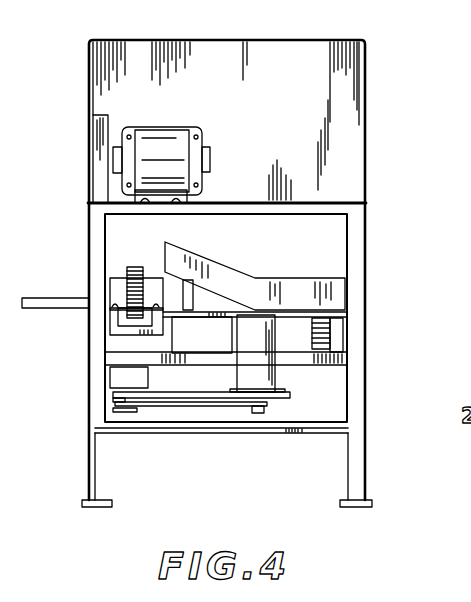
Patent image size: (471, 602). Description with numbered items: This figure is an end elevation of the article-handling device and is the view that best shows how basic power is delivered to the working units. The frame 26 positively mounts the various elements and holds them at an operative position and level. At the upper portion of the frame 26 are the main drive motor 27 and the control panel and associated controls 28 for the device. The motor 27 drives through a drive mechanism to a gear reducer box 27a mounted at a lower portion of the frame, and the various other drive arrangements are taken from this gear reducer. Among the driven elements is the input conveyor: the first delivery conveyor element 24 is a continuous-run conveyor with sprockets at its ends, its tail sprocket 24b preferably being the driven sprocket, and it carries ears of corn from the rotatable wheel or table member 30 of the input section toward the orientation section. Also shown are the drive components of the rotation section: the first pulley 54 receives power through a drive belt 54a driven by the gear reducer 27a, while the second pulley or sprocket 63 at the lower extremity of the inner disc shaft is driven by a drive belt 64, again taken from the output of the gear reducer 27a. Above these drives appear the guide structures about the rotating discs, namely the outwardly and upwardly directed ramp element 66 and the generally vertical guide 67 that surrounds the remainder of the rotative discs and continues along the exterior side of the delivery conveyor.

The control panel and associated controls 28 is at (368, 95).
The frame 26 is at (368, 250).
The main drive motor 27 is at (148, 120).
The gear reducer box 27a is at (117, 379).
The first delivery conveyor element 24 is at (136, 266).
The tail sprocket 24b is at (122, 286).
The rotatable wheel or table member 30 is at (44, 309).
The ramp element 66 is at (234, 274).
The vertical guide 67 is at (308, 286).
The first pulley 54 is at (288, 398).
The drive belt 54a is at (164, 381).
The drive belt 64 is at (165, 410).
The second pulley or sprocket 63 is at (263, 408).